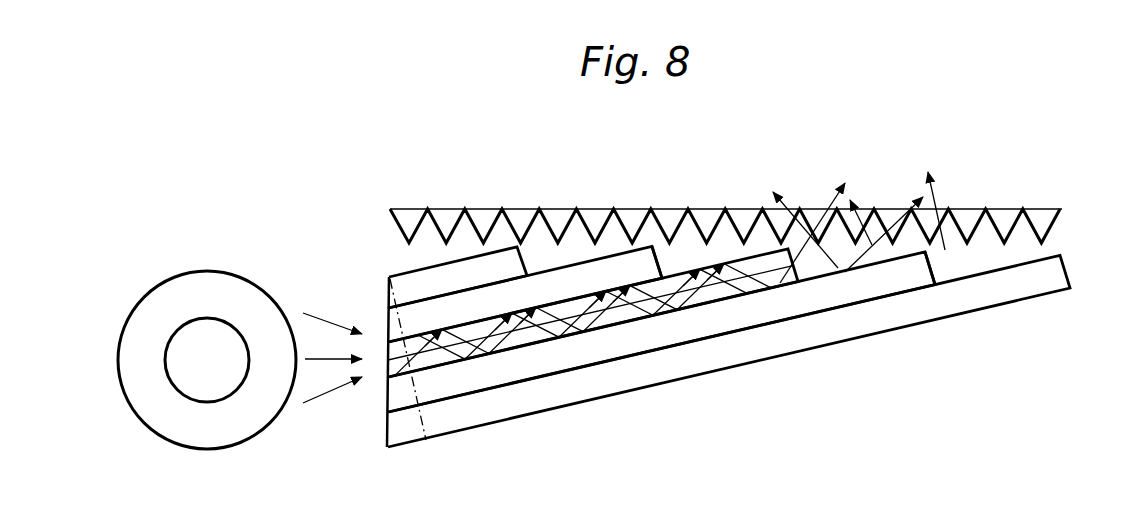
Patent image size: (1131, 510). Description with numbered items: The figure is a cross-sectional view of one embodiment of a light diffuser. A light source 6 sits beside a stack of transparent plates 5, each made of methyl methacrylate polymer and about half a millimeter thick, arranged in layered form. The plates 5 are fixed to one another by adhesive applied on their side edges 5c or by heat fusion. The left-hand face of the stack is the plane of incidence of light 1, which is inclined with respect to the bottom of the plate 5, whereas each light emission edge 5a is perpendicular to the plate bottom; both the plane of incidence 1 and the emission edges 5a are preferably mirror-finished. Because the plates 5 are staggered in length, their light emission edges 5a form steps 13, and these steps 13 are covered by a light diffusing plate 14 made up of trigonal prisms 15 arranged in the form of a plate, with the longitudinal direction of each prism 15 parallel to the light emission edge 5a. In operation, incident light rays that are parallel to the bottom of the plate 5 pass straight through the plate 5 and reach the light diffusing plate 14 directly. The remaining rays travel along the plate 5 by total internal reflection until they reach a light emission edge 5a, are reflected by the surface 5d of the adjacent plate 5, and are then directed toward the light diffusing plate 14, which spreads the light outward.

The plane of incidence of light 1 is at (383, 400).
The transparent plate 5 is at (388, 325).
The light emission edge 5a is at (938, 262).
The side edge 5c is at (652, 335).
The surface of adjacent plate 5d is at (413, 270).
The light source 6 is at (197, 272).
The step 13 is at (657, 245).
The light diffusing plate 14 is at (862, 207).
The prism 15 is at (478, 220).